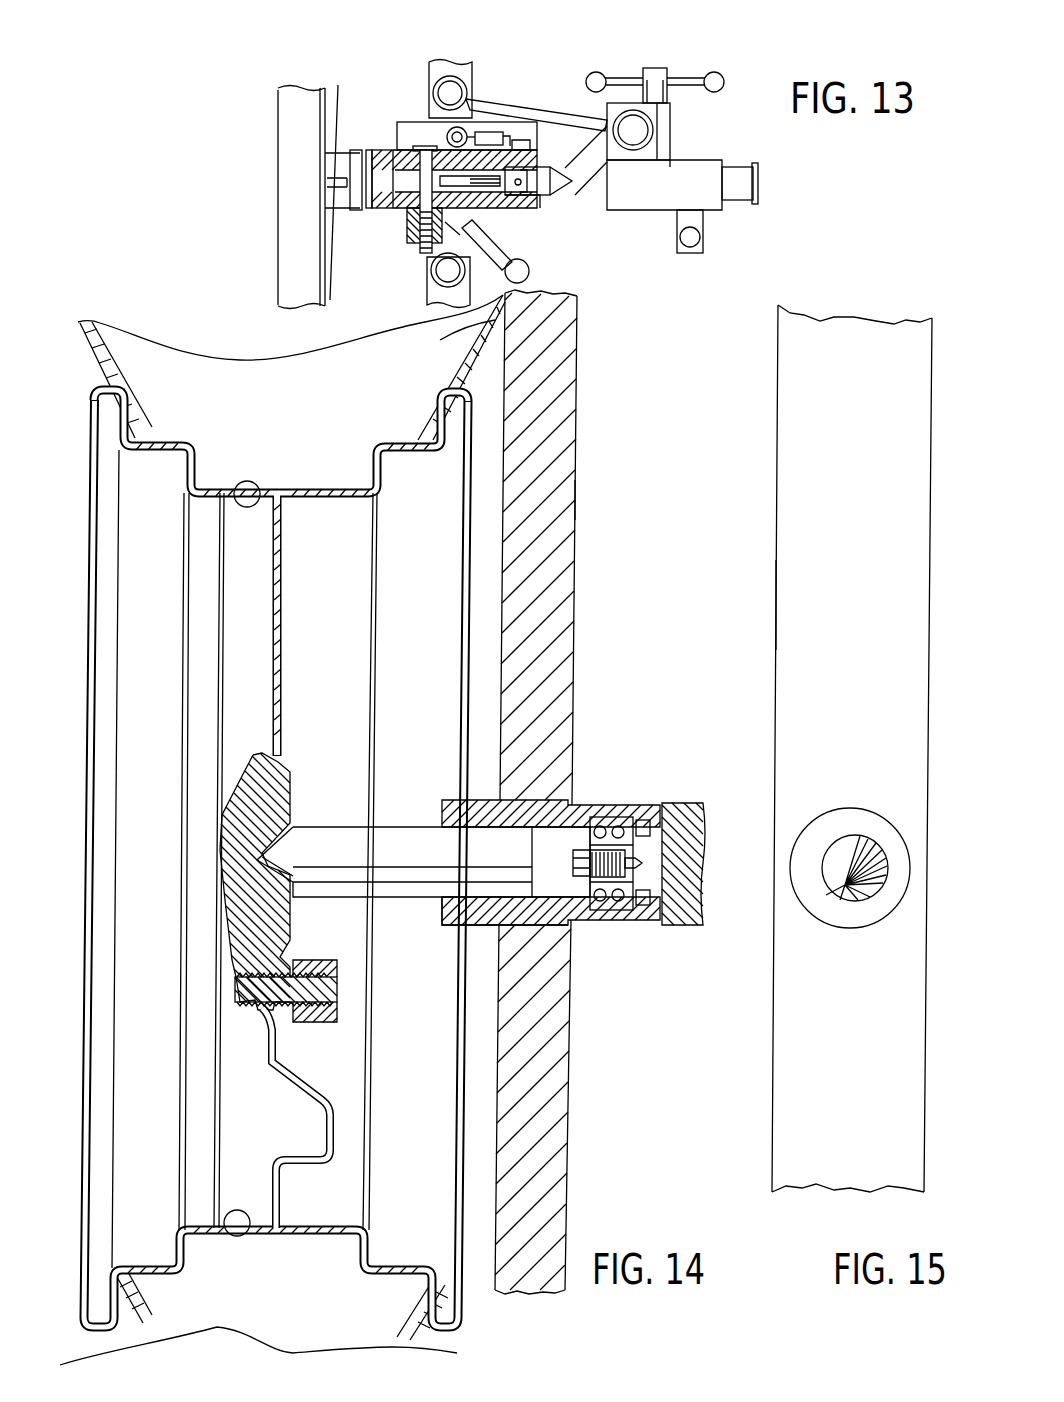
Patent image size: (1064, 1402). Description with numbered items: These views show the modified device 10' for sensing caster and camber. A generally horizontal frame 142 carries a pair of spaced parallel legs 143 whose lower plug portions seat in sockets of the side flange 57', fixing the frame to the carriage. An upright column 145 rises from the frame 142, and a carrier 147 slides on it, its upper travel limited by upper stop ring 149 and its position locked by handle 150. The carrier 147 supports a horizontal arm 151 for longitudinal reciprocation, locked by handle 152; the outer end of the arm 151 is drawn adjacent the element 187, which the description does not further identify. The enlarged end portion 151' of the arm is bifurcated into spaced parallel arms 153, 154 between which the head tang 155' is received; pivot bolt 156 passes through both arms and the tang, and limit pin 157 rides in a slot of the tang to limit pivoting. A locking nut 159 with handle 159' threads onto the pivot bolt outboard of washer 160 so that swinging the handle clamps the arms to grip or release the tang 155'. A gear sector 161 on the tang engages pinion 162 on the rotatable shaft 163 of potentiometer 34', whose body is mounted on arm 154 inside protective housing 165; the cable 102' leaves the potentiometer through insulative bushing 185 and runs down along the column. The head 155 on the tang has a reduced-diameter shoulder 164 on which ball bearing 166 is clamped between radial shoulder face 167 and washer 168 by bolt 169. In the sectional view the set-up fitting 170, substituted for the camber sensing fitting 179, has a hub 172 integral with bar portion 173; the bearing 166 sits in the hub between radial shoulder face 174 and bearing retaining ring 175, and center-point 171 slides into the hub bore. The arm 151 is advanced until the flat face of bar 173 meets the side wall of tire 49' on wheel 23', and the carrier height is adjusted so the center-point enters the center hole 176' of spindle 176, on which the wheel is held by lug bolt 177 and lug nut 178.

In FIG. 13, the legs 143 is at (450, 76).
In FIG. 13, the frame 142 is at (476, 100).
In FIG. 13, the cable 102' is at (506, 91).
In FIG. 13, the protective housing 165 is at (538, 130).
In FIG. 13, the upper stop ring 149 is at (628, 124).
In FIG. 13, the handle 150 is at (720, 79).
In FIG. 13, the camber sensing fitting 179 is at (334, 98).
In FIG. 13, the insulative bushing 185 is at (447, 134).
In FIG. 13, the potentiometer 34' is at (503, 102).
In FIG. 13, the rotatable shaft 163 is at (532, 150).
In FIG. 13, the arm 154 is at (355, 150).
In FIG. 13, the limit pin 157 is at (382, 150).
In FIG. 13, the pinion 162 is at (512, 164).
In FIG. 13, the column 145 is at (642, 130).
In FIG. 13, the arm 153 is at (347, 192).
In FIG. 13, the gear sector 161 is at (537, 181).
In FIG. 13, the enlarged end portion 151' is at (586, 161).
In FIG. 13, the flange 187 is at (757, 171).
In FIG. 13, the head tang 155' is at (370, 194).
In FIG. 13, the washer 160 is at (455, 212).
In FIG. 13, the carrier 147 is at (664, 205).
In FIG. 13, the horizontal arm 151 is at (764, 195).
In FIG. 13, the pivot bolt 156 is at (407, 236).
In FIG. 13, the locking nut 159 is at (404, 215).
In FIG. 13, the handle 159' is at (566, 269).
In FIG. 13, the handle 152 is at (701, 237).
In FIG. 13, the side flange 57' is at (353, 197).
In FIG. 13, the modified device 10' is at (838, 176).
In FIG. 14, the tire 49' is at (282, 830).
In FIG. 14, the wheel 23' is at (276, 858).
In FIG. 14, the set-up fitting 170 is at (613, 445).
In FIG. 15, the set-up fitting 170 is at (757, 352).
In FIG. 14, the bar portion 173 is at (560, 499).
In FIG. 15, the bar portion 173 is at (777, 604).
In FIG. 14, the spindle 176 is at (255, 863).
In FIG. 14, the center hole 176' is at (306, 861).
In FIG. 14, the center-point 171 is at (279, 842).
In FIG. 15, the center-point 171 is at (838, 836).
In FIG. 14, the hub 172 is at (466, 802).
In FIG. 15, the hub 172 is at (888, 830).
In FIG. 14, the radial shoulder face 174 is at (605, 816).
In FIG. 14, the ball bearing 166 is at (619, 824).
In FIG. 14, the head 155 is at (696, 848).
In FIG. 14, the shoulder 164 is at (630, 855).
In FIG. 14, the radial shoulder face 167 is at (627, 868).
In FIG. 14, the bolt 169 is at (578, 861).
In FIG. 14, the washer 168 is at (545, 906).
In FIG. 14, the bearing retaining ring 175 is at (621, 926).
In FIG. 14, the lug nut 178 is at (296, 963).
In FIG. 14, the lug bolt 177 is at (338, 988).